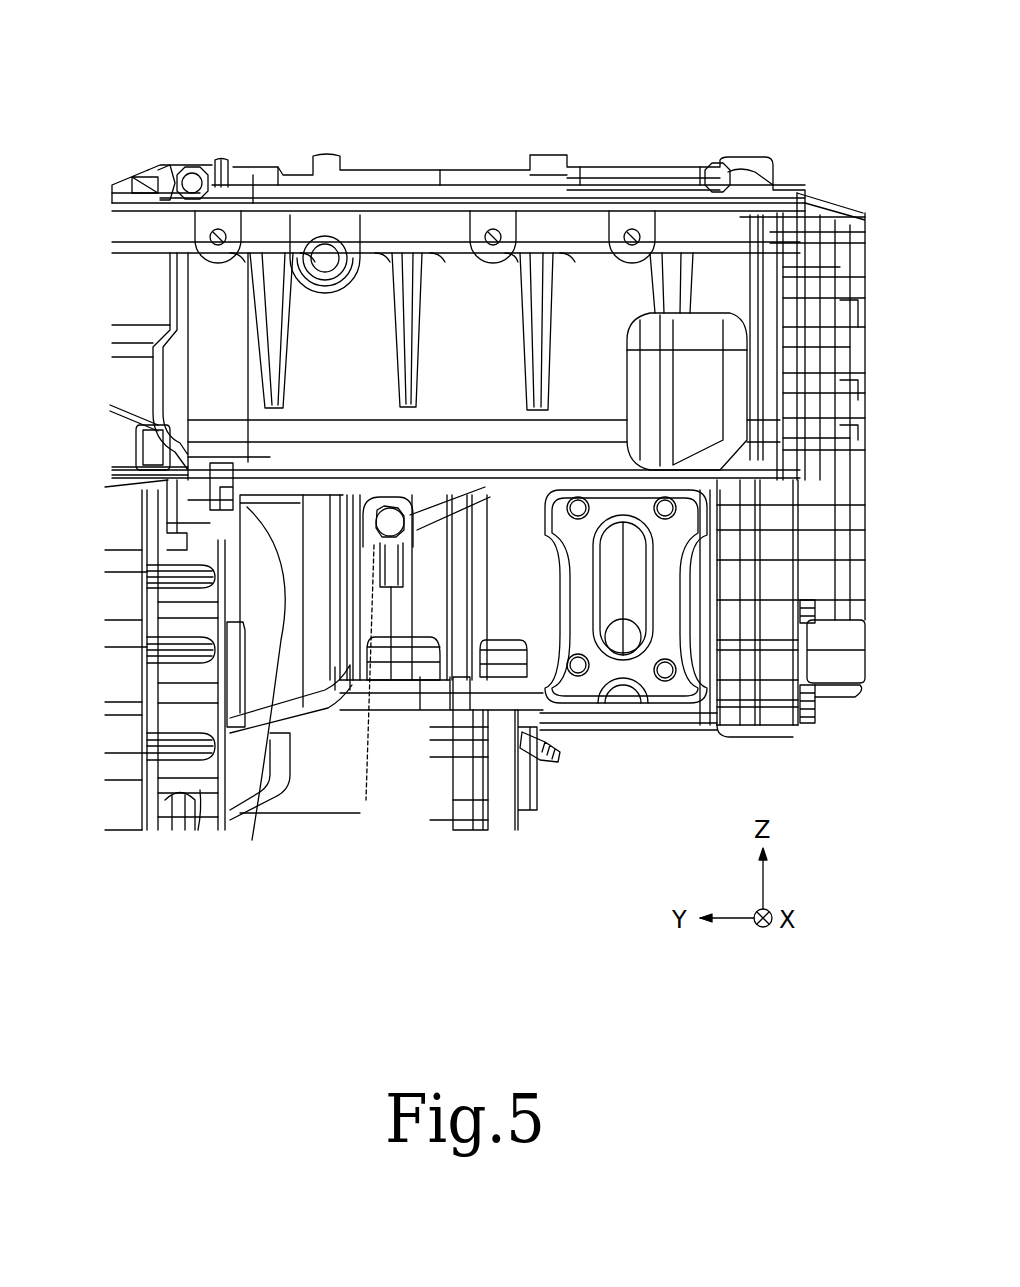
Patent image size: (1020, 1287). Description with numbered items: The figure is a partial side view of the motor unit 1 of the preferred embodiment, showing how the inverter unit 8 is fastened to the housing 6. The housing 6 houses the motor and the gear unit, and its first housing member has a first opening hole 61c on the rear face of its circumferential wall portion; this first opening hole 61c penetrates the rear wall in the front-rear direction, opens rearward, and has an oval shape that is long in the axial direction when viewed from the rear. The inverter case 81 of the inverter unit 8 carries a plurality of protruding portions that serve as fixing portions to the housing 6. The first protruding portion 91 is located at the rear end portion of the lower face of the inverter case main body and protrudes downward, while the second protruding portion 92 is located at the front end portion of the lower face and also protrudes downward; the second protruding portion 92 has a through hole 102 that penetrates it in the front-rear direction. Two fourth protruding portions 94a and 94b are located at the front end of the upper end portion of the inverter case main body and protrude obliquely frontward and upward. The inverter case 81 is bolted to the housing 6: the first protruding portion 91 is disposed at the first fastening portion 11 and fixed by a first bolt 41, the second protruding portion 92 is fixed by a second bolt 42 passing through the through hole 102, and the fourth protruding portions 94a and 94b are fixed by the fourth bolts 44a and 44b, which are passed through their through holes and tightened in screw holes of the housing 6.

The motor unit 1 is at (830, 110).
The housing 6 is at (258, 177).
The inverter unit 8 is at (633, 165).
The first fastening portion 11 is at (163, 507).
The first bolt 41 is at (247, 790).
The second bolt 42 is at (402, 780).
The fourth bolt 44a is at (195, 165).
The fourth bolt 44b is at (712, 162).
The first opening hole 61c is at (182, 800).
The inverter case 81 is at (480, 300).
The first protruding portion 91 is at (187, 480).
The second protruding portion 92 is at (377, 518).
The fourth protruding portion 94a is at (175, 183).
The fourth protruding portion 94b is at (745, 160).
The through hole 102 is at (366, 800).